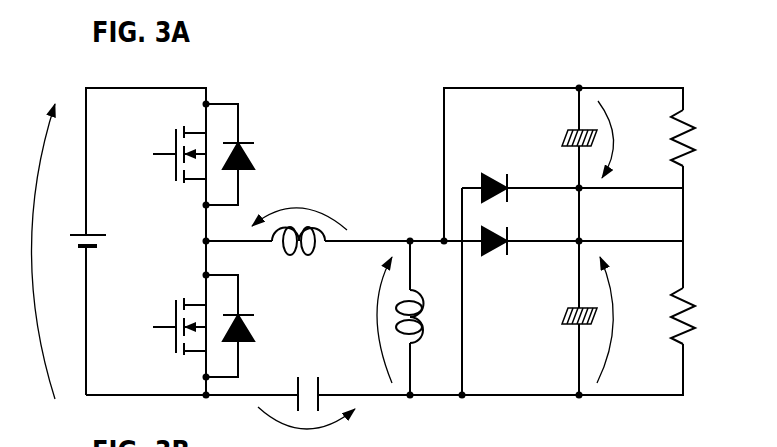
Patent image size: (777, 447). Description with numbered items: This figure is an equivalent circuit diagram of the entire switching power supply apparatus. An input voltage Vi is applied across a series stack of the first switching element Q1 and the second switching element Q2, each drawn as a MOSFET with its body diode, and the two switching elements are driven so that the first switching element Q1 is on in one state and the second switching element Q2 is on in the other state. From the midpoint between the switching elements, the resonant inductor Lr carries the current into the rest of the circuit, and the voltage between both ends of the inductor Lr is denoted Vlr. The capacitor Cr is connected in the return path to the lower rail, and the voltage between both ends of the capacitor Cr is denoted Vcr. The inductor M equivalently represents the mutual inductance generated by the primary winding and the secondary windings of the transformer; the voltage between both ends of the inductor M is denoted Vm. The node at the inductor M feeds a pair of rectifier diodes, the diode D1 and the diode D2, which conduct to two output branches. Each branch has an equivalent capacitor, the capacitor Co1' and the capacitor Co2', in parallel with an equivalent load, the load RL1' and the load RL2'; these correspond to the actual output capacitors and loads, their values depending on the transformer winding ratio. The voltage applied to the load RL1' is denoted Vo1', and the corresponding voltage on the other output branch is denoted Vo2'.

The first switching element Q1 is at (197, 154).
The second switching element Q2 is at (197, 326).
The inductor Lr is at (298, 253).
The capacitor Cr is at (308, 383).
The diode D1 is at (494, 254).
The diode D2 is at (494, 178).
The capacitor Co1' is at (559, 312).
The capacitor Co2' is at (559, 134).
The load RL1' is at (700, 316).
The load RL2' is at (700, 138).
The inductor M is at (410, 228).
The input voltage Vi is at (32, 251).
The voltage between both ends of the inductor Lr Vlr is at (299, 208).
The voltage between both ends of the inductor M Vm is at (368, 320).
The voltage between both ends of the capacitor Cr Vcr is at (306, 427).
The voltage to be applied to the load RL1' Vo1' is at (623, 320).
The second output voltage Vo2' is at (624, 139).